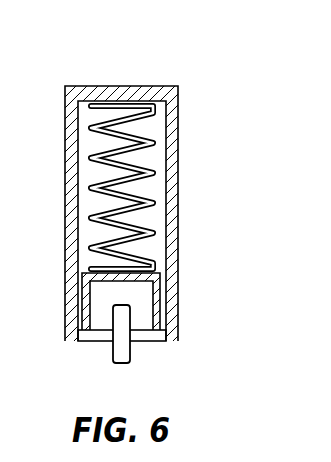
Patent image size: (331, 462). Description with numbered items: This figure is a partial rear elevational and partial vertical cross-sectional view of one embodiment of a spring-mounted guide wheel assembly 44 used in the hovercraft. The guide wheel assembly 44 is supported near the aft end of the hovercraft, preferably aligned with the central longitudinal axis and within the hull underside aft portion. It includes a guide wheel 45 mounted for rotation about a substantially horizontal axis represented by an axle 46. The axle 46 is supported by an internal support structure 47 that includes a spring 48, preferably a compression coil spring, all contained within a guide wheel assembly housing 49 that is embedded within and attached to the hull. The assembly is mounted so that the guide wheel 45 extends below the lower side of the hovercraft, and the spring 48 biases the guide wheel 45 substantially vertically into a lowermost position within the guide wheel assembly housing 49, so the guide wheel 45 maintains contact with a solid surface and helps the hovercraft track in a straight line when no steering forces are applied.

The guide wheel assembly 44 is at (165, 198).
The guide wheel 45 is at (130, 343).
The axle 46 is at (97, 340).
The internal support structure 47 is at (151, 284).
The spring 48 is at (157, 145).
The guide wheel assembly housing 49 is at (173, 230).